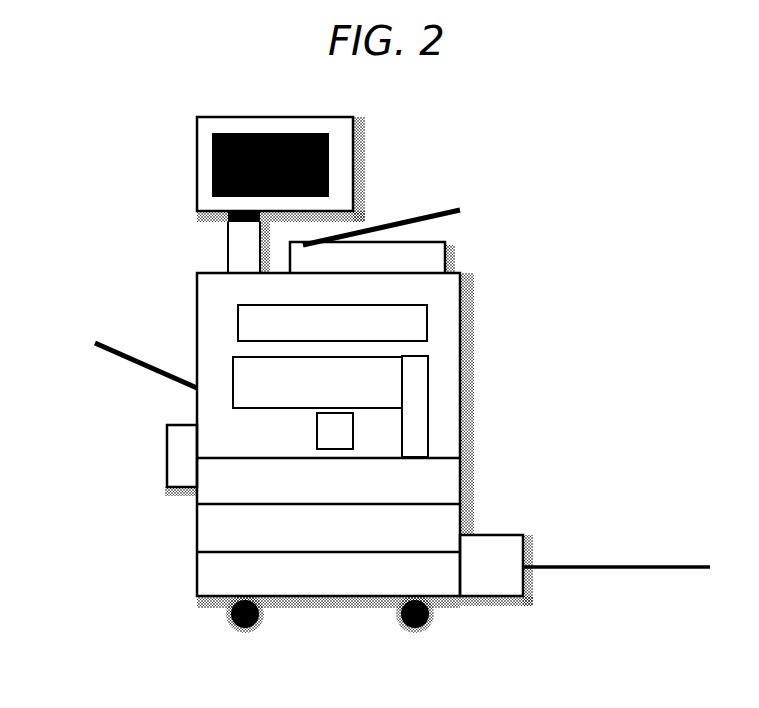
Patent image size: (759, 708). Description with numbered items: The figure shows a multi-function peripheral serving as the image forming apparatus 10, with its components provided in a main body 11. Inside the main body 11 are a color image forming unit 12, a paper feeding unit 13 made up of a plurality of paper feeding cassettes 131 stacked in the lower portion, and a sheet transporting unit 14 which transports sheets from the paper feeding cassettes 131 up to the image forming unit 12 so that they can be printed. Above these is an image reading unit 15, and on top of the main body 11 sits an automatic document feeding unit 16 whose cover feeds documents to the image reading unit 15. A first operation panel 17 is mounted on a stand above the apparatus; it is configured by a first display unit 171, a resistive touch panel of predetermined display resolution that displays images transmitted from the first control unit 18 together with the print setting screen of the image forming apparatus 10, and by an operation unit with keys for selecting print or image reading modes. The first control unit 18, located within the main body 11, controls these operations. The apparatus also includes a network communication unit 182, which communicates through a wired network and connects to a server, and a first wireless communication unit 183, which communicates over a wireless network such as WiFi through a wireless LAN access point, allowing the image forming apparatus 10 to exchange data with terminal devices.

The image forming apparatus 10 is at (462, 630).
The main body 11 is at (462, 450).
The color image forming unit 12 is at (233, 360).
The paper feeding unit 13 is at (262, 561).
The paper feeding cassettes 131 is at (197, 495).
The sheet transporting unit 14 is at (430, 367).
The image reading unit 15 is at (427, 323).
The automatic document feeding unit 16 is at (383, 260).
The first operation panel 17 is at (270, 180).
The first display unit 171 is at (328, 152).
The first control unit 18 is at (338, 432).
The network communication unit 182 is at (487, 548).
The first wireless communication unit 183 is at (177, 462).